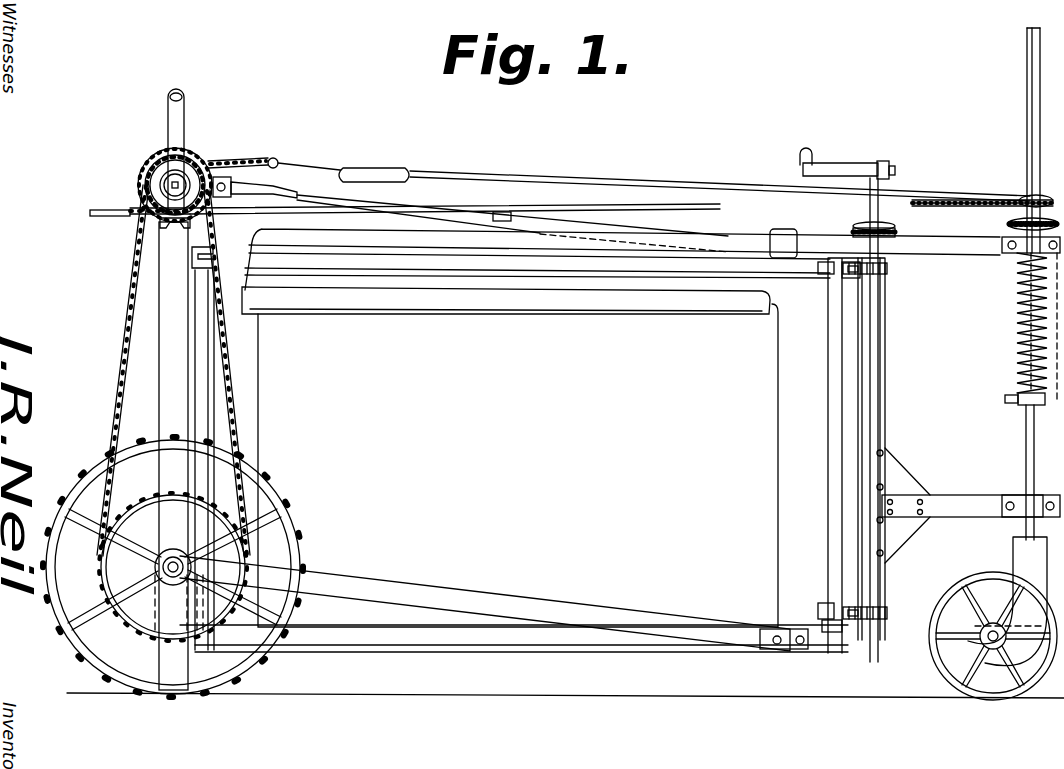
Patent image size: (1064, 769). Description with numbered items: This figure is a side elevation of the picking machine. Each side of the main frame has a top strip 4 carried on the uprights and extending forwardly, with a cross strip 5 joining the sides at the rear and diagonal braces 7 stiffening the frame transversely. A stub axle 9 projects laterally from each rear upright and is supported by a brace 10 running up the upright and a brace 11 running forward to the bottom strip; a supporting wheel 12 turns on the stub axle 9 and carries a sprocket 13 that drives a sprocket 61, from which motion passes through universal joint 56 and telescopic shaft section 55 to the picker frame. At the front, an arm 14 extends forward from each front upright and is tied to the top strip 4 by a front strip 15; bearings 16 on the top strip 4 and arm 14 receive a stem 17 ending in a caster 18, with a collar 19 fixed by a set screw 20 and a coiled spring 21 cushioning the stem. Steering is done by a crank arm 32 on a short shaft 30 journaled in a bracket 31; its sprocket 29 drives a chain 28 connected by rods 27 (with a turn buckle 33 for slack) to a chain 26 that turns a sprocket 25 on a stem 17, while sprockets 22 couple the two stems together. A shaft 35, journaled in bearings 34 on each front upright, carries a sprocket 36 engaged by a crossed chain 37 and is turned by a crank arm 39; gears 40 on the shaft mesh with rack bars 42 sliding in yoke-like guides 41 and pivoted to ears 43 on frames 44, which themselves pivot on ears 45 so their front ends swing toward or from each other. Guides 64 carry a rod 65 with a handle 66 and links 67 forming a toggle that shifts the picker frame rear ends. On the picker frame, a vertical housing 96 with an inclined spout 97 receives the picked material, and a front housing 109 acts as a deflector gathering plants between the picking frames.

The top strip 4 is at (542, 230).
The cross strip 5 is at (168, 226).
The diagonal brace 7 is at (888, 386).
The stub axle 9 is at (155, 568).
The brace 10 is at (160, 396).
The brace 11 is at (462, 592).
The supporting wheel 12 is at (288, 525).
The sprocket 13 is at (213, 510).
The arm 14 is at (950, 496).
The front strip 15 is at (1034, 346).
The bearing 16 is at (1035, 252).
The stem 17 is at (1026, 60).
The caster 18 is at (978, 574).
The collar 19 is at (1022, 404).
The set screw 20 is at (1008, 396).
The coiled spring 21 is at (1020, 316).
The sprocket 22 is at (1007, 223).
The sprocket 25 is at (1040, 194).
The chain 26 is at (966, 200).
The rod 27 is at (452, 206).
The chain 28 is at (263, 158).
The sprocket 29 is at (196, 166).
The short shaft 30 is at (160, 163).
The bracket 31 is at (161, 187).
The crank arm 32 is at (180, 113).
The turn buckle 33 is at (389, 170).
The bearing 34 is at (880, 290).
The shaft 35 is at (884, 428).
The sprocket 36 is at (890, 224).
The crossed chain 37 is at (897, 232).
The crank arm 39 is at (846, 163).
The gear 40 is at (890, 269).
The yoke-like guide 41 is at (884, 272).
The rack bar 42 is at (850, 266).
The ear 43 is at (840, 280).
The frame 44 is at (540, 283).
The ear 45 is at (186, 260).
The telescopic shaft section 55 is at (512, 206).
The universal joint 56 is at (292, 186).
The sprocket 61 is at (137, 215).
The guide 64 is at (502, 212).
The rod 65 is at (567, 215).
The handle 66 is at (125, 210).
The link 67 is at (120, 318).
The vertical housing 96 is at (518, 465).
The spout 97 is at (592, 312).
The housing 109 is at (866, 398).